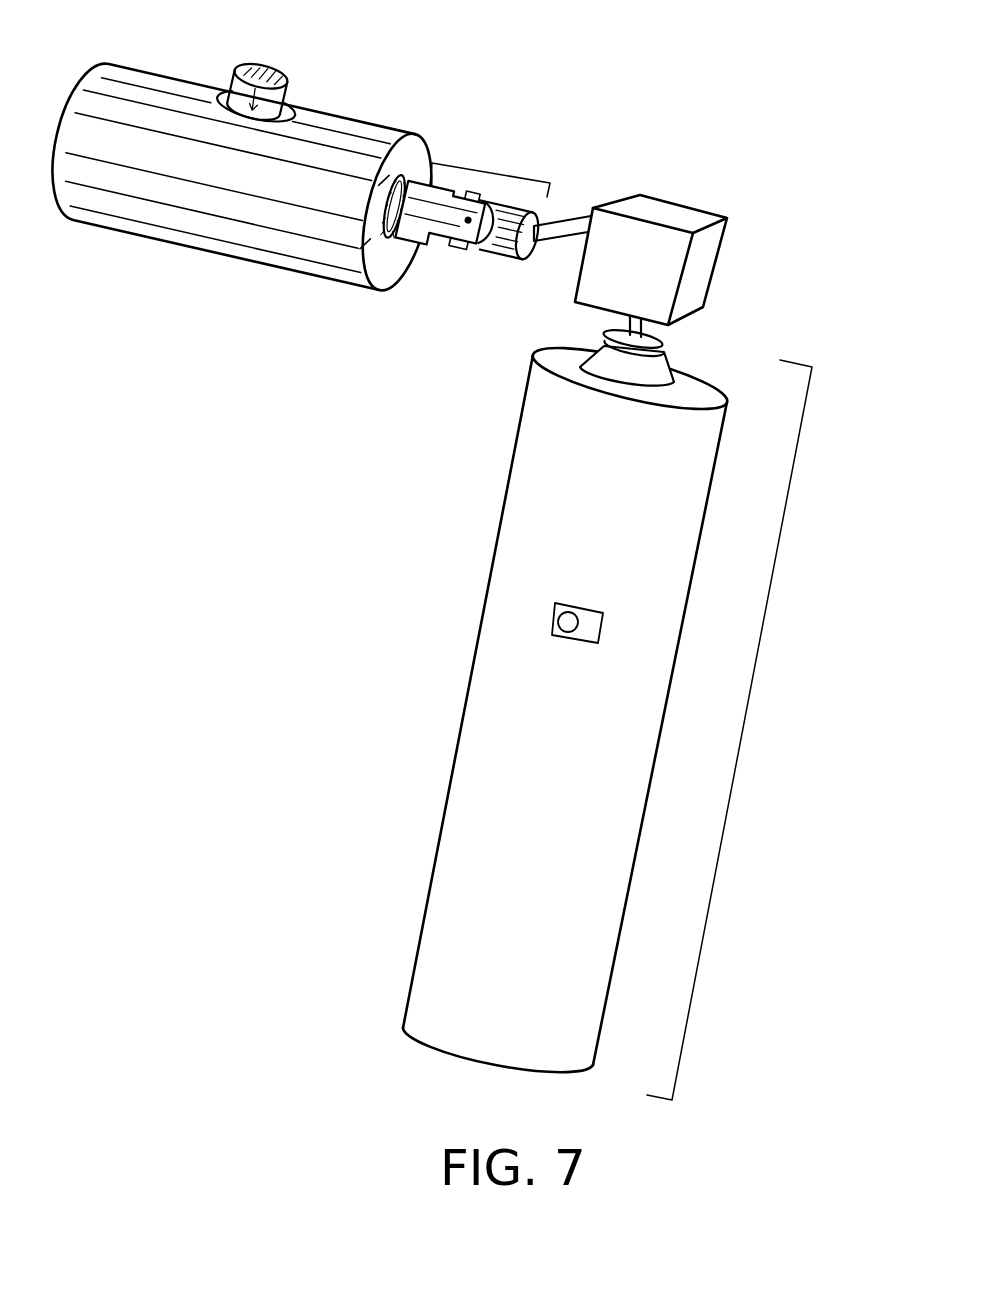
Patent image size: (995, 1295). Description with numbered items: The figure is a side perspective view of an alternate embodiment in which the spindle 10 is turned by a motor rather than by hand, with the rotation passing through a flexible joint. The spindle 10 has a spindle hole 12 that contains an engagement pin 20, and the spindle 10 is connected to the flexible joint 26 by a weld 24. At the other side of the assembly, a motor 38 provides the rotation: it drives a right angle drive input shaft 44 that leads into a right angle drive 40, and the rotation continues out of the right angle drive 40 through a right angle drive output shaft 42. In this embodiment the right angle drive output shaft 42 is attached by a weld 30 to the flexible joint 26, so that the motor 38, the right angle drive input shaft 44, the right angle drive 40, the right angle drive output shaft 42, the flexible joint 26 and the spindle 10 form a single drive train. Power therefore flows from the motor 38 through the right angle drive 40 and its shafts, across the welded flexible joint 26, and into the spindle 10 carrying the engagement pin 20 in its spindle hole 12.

The spindle 10 is at (333, 105).
The spindle hole 12 is at (287, 110).
The engagement pin 20 is at (233, 73).
The weld 24 is at (423, 143).
The flexible joint 26 is at (492, 165).
The weld 30 is at (537, 218).
The motor 38 is at (748, 705).
The right angle drive 40 is at (700, 248).
The right angle drive output shaft 42 is at (592, 220).
The right angle drive input shaft 44 is at (643, 333).